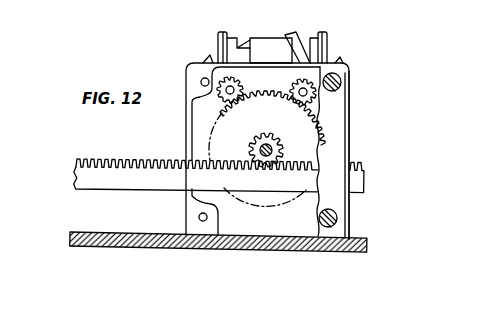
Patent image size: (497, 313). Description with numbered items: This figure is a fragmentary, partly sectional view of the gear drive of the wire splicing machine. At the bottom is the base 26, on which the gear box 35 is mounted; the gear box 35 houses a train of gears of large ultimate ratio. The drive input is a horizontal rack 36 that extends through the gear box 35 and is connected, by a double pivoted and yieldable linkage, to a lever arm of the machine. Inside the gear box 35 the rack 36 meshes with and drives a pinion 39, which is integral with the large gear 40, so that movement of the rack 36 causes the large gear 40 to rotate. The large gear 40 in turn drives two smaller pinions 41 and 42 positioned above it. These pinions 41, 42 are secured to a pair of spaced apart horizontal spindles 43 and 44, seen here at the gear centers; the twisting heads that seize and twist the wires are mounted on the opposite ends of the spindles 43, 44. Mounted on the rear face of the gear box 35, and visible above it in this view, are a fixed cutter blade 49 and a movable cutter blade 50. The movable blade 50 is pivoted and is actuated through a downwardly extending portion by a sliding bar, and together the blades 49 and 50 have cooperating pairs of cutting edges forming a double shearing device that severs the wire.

The base 26 is at (174, 238).
The gear box 35 is at (346, 143).
The rack 36 is at (177, 190).
The pinion 39 is at (273, 137).
The large gear 40 is at (281, 98).
The pinion 41 is at (241, 85).
The pinion 42 is at (293, 85).
The spindle 43 is at (223, 94).
The spindle 44 is at (307, 89).
The fixed cutter blade 49 is at (266, 44).
The movable cutter blade 50 is at (286, 34).